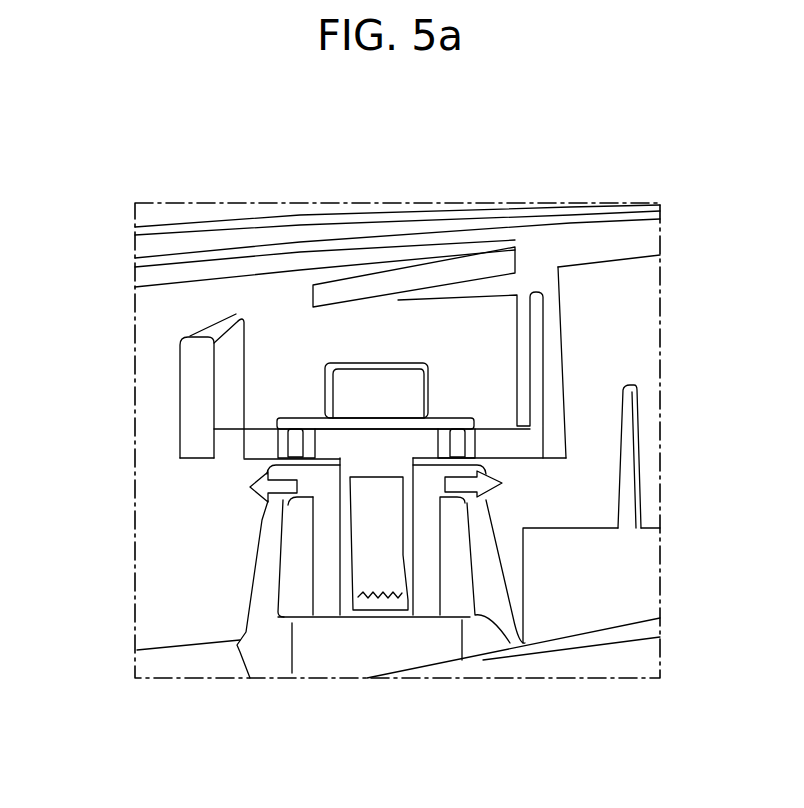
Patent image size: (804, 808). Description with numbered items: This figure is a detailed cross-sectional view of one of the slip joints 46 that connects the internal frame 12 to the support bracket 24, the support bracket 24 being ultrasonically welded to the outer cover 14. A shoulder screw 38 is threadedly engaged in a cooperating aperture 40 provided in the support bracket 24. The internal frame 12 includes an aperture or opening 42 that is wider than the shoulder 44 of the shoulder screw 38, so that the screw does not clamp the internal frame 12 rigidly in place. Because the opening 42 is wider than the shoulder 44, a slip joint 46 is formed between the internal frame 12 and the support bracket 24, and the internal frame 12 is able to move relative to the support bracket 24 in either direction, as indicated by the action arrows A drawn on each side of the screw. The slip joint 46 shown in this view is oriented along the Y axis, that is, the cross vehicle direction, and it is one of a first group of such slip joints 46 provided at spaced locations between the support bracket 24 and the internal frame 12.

The internal frame 12 is at (552, 360).
The outer cover 14 is at (580, 660).
The support bracket 24 is at (257, 568).
The shoulder screw 38 is at (374, 388).
The cooperating aperture 40 is at (342, 535).
The aperture or opening 42 is at (297, 443).
The shoulder 44 is at (347, 443).
The slip joint 46 is at (222, 471).
The action arrows A is at (257, 487).